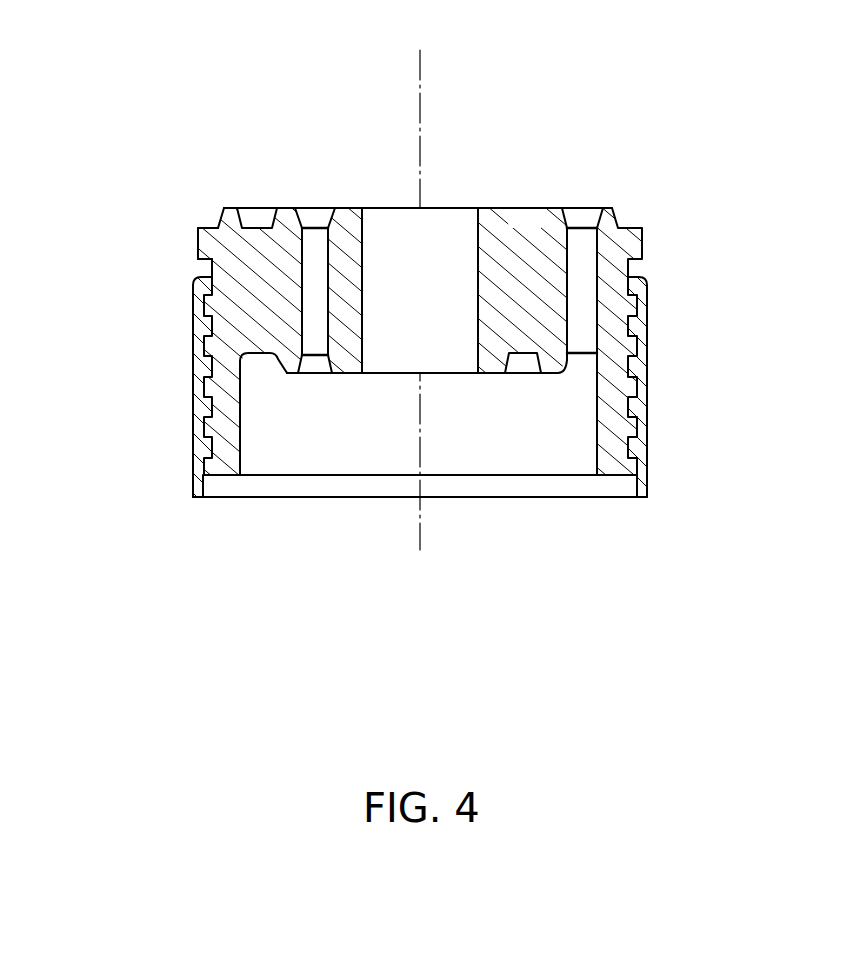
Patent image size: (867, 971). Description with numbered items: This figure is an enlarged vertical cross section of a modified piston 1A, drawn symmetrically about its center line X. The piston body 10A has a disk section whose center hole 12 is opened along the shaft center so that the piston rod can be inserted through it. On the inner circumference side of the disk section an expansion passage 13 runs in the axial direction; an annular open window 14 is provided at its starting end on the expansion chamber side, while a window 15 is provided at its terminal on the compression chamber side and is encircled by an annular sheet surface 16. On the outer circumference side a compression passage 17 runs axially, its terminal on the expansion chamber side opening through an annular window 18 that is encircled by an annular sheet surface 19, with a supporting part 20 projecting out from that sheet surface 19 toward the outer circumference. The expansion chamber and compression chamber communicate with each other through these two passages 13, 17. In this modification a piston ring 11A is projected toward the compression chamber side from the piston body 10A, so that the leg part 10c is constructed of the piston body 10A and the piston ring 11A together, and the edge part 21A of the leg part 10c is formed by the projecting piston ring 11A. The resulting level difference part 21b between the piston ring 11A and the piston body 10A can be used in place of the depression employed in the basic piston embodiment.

The piston 1A is at (609, 103).
The piston body 10A is at (654, 230).
The leg part 10c is at (242, 458).
The piston ring 11A is at (648, 403).
The center hole 12 is at (470, 257).
The expansion passage 13 is at (317, 278).
The annular open window 14 is at (320, 213).
The window 15 is at (318, 365).
The annular sheet surface 16 is at (287, 377).
The compression passage 17 is at (585, 305).
The annular window 18 is at (583, 218).
The annular sheet surface 19 is at (235, 208).
The supporting part 20 is at (198, 252).
The edge part 21A is at (185, 488).
The level difference part 21b is at (633, 482).
The center line X is at (421, 100).